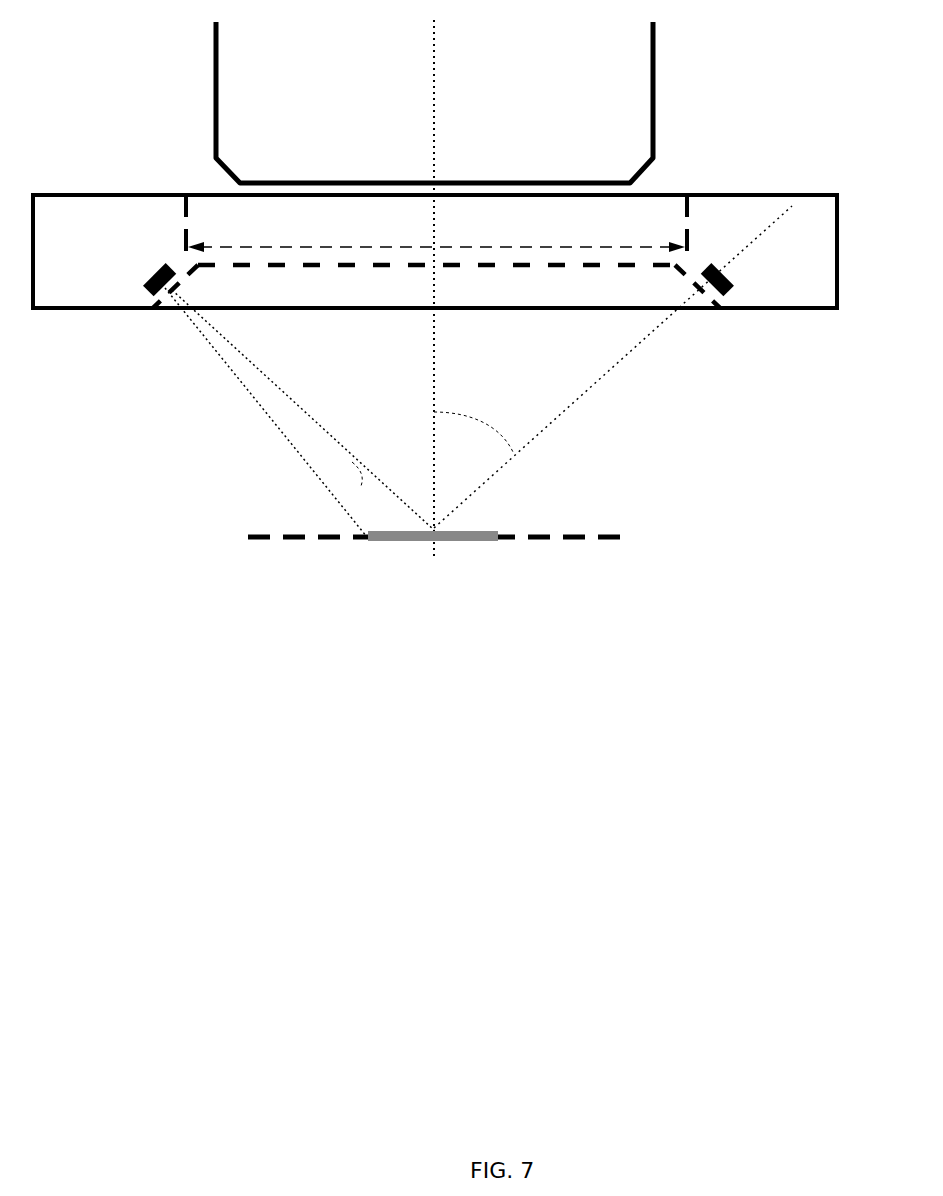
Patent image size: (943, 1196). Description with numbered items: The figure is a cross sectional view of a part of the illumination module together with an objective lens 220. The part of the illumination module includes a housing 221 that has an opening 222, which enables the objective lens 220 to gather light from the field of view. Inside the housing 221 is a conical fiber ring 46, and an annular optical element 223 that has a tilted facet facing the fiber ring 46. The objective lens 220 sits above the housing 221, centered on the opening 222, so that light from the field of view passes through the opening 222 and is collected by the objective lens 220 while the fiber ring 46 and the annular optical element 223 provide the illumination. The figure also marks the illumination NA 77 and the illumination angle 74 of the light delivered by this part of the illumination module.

The objective lens 220 is at (549, 85).
The housing 221 is at (730, 195).
The opening 222 is at (226, 196).
The annular optical element 223 is at (497, 267).
The conical fiber ring 46 is at (148, 274).
The illumination angle 74 is at (473, 421).
The illumination NA 77 is at (350, 470).